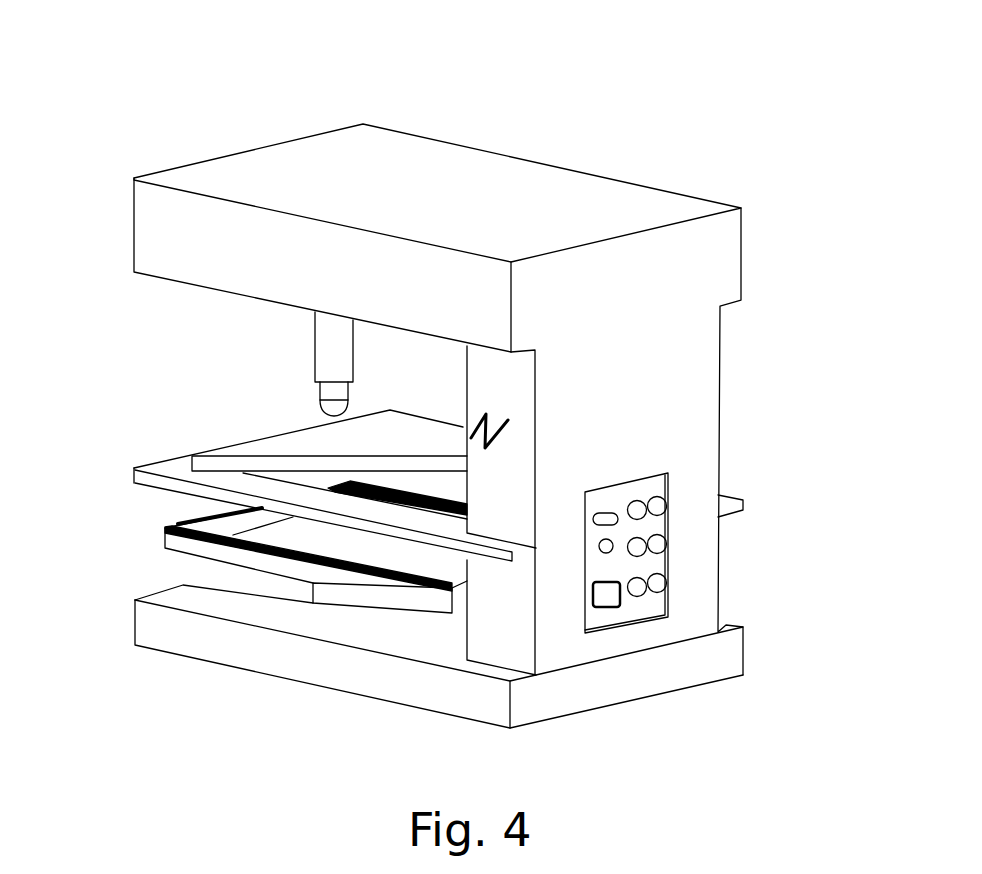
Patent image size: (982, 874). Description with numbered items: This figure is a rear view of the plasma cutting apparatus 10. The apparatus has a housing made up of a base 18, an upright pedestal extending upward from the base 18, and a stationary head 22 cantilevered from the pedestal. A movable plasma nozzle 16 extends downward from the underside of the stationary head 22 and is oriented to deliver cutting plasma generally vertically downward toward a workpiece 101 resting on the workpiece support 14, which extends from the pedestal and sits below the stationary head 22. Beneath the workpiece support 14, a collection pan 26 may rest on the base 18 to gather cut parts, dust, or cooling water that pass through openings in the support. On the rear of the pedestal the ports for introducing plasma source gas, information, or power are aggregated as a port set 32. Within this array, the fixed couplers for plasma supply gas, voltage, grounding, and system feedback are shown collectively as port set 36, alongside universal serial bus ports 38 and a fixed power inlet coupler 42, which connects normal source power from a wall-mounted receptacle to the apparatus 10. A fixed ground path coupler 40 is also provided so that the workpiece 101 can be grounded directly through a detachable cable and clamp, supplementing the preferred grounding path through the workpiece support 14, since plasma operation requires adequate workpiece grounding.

The plasma cutting apparatus 10 is at (507, 67).
The stationary head 22 is at (502, 175).
The movable plasma nozzle 16 is at (330, 361).
The workpiece 101 is at (263, 445).
The workpiece support 14 is at (162, 487).
The collection pan 26 is at (170, 545).
The base 18 is at (291, 665).
The port set 32 is at (670, 487).
The port set of fixed couplers 36 is at (670, 562).
The universal serial bus ports 38 is at (605, 514).
The fixed ground path coupler 40 is at (600, 548).
The fixed power inlet coupler 42 is at (608, 607).